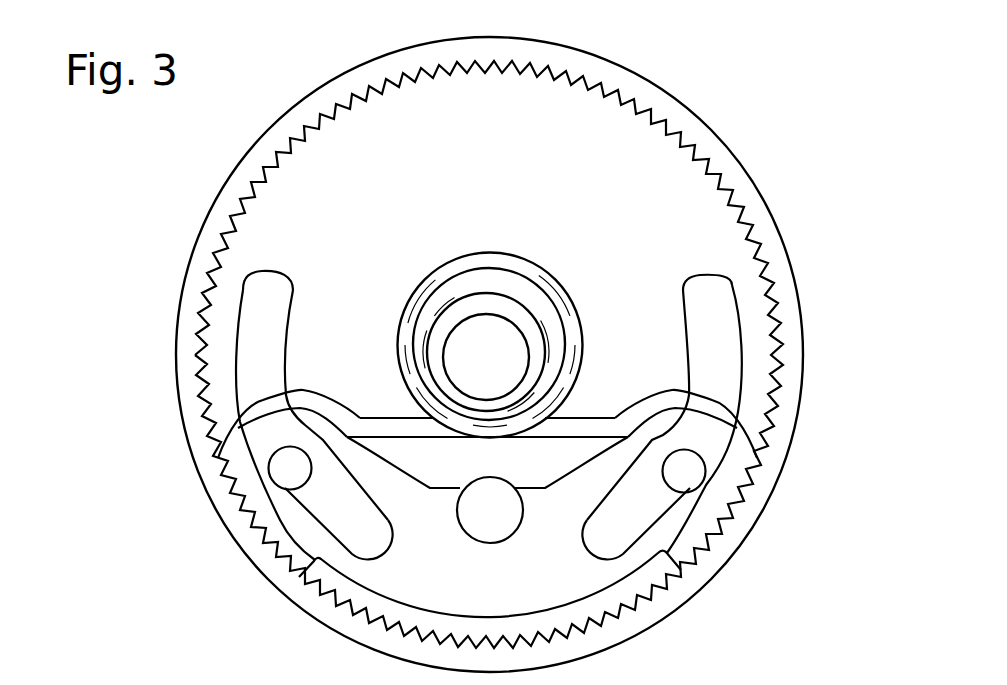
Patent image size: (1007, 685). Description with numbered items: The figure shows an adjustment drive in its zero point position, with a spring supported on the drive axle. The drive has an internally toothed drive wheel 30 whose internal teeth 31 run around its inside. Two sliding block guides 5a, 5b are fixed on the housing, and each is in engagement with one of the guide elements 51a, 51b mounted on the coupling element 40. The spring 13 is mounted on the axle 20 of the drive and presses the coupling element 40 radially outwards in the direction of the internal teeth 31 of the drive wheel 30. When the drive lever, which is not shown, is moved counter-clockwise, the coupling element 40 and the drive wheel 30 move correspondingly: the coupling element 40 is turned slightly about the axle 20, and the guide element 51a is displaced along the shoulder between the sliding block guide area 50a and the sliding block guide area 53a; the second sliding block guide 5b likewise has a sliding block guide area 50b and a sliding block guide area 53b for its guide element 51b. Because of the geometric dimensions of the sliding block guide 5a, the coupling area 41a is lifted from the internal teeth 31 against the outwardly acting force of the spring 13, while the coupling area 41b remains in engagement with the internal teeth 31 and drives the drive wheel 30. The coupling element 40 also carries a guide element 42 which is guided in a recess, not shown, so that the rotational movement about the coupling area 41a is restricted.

The drive wheel 30 is at (765, 199).
The internal teeth 31 is at (713, 167).
The axle 20 is at (472, 330).
The spring 13 is at (592, 420).
The sliding block guide 5a is at (228, 332).
The sliding block guide 5b is at (741, 418).
The sliding block guide area 50a is at (255, 277).
The sliding block guide area 50b is at (732, 282).
The guide element 51a is at (276, 449).
The guide element 51b is at (697, 450).
The coupling area 41a is at (235, 462).
The coupling area 41b is at (752, 467).
The sliding block guide area 53a is at (303, 505).
The sliding block guide area 53b is at (657, 522).
The coupling element 40 is at (613, 572).
The guide element 42 is at (480, 518).